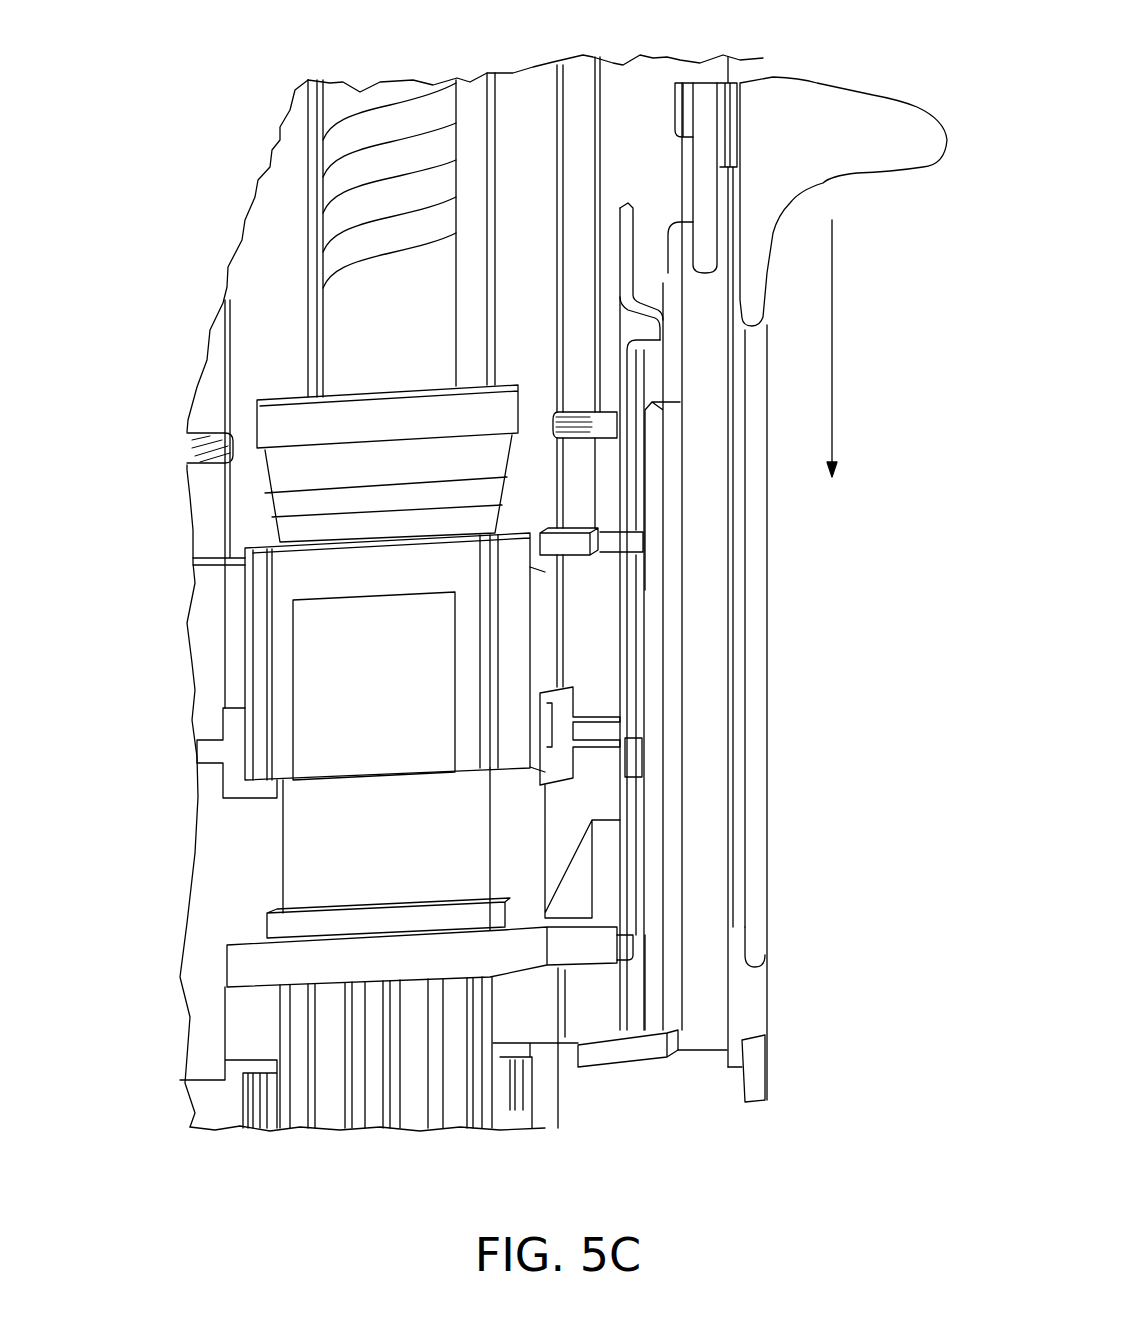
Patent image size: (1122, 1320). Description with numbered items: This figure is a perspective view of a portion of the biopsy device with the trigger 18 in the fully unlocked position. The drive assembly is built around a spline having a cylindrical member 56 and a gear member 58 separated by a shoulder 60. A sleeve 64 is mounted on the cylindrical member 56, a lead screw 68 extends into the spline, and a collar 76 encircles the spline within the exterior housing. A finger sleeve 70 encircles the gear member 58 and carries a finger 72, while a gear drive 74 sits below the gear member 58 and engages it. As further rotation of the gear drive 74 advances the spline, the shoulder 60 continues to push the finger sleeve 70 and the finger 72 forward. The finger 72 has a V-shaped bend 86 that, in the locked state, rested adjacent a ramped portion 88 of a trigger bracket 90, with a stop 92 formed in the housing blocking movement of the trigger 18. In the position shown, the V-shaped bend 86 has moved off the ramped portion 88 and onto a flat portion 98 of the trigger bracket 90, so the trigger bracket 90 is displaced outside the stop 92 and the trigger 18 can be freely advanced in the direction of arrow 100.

The trigger 18 is at (825, 182).
The cylindrical member 56 is at (340, 807).
The gear member 58 is at (407, 1107).
The shoulder 60 is at (290, 922).
The sleeve 64 is at (288, 427).
The lead screw 68 is at (340, 150).
The finger sleeve 70 is at (237, 957).
The finger 72 is at (633, 223).
The gear drive 74 is at (522, 1105).
The collar 76 is at (260, 668).
The V-shaped bend 86 is at (640, 297).
The ramped portion 88 is at (662, 283).
The trigger bracket 90 is at (718, 345).
The stop 92 is at (623, 475).
The flat portion 98 is at (670, 362).
The arrow 100 is at (833, 355).